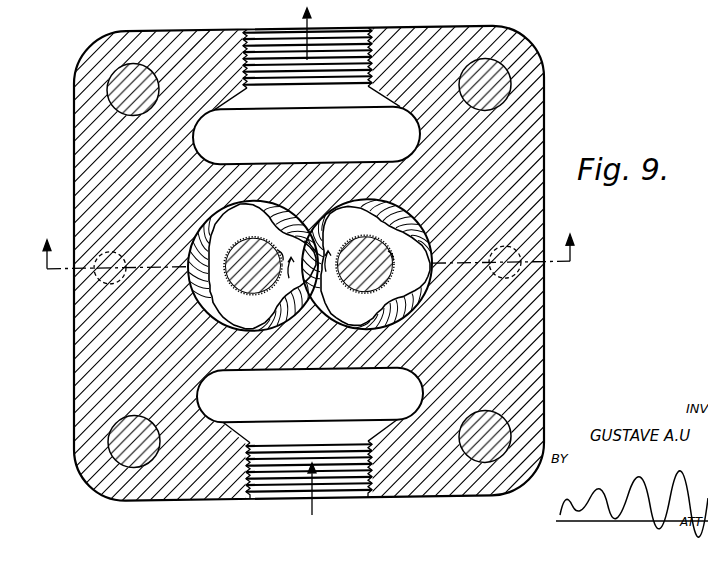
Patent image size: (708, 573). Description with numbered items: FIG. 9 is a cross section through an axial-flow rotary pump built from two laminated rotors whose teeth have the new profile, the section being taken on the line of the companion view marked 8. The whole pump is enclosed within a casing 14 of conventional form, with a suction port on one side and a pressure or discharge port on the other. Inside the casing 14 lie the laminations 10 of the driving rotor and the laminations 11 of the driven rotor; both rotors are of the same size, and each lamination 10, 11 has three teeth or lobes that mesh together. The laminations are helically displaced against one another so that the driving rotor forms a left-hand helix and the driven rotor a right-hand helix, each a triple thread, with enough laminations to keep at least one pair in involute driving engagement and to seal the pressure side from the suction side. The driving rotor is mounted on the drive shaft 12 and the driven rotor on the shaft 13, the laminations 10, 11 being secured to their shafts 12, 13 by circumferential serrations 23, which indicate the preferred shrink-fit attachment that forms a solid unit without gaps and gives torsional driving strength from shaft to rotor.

The section line 8- 8 is at (308, 246).
The laminations of the driving rotor 10 is at (240, 200).
The laminations of the driven rotor 11 is at (347, 318).
The drive shaft 12 is at (247, 262).
The shaft 13 is at (367, 252).
The casing 14 is at (530, 316).
The circumferential serrations 23 is at (392, 258).